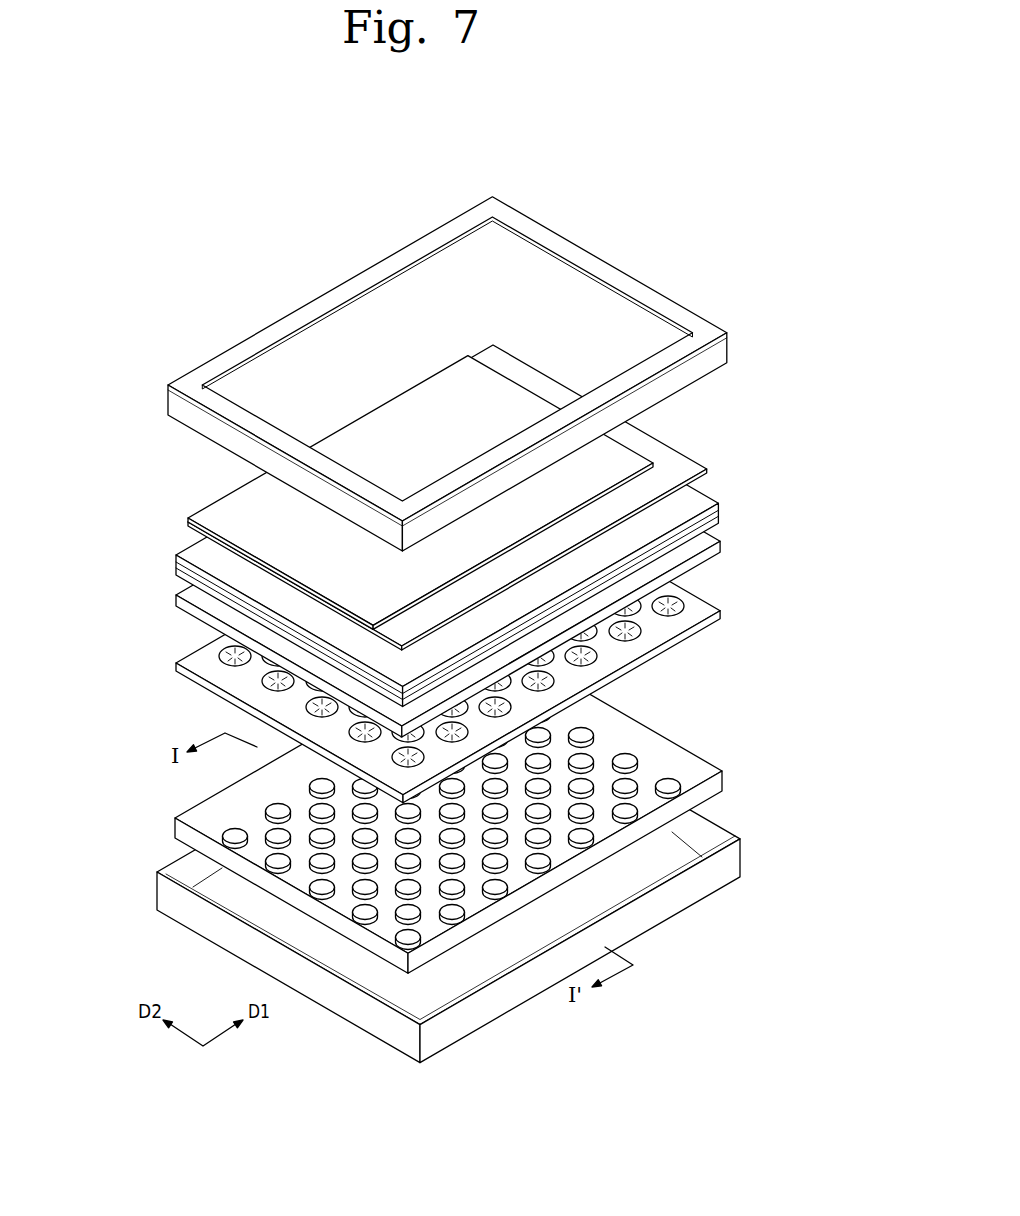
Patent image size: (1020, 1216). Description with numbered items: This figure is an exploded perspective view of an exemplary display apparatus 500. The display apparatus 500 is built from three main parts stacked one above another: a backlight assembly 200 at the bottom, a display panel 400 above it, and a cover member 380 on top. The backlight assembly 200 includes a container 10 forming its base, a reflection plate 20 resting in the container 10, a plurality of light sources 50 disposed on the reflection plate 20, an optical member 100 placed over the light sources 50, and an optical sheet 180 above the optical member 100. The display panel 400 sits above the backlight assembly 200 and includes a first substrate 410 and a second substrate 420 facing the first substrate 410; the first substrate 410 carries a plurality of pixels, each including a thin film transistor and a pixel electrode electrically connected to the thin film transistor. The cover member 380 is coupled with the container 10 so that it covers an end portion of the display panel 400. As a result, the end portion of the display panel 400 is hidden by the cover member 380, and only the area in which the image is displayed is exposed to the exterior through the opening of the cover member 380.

The display apparatus 500 is at (431, 618).
The cover member 380 is at (195, 355).
The display panel 400 is at (506, 497).
The second substrate 420 is at (627, 457).
The first substrate 410 is at (665, 452).
The backlight assembly 200 is at (389, 717).
The optical sheet 180 is at (406, 539).
The optical member 100 is at (176, 651).
The light sources 50 is at (235, 828).
The reflection plate 20 is at (174, 808).
The container 10 is at (157, 859).